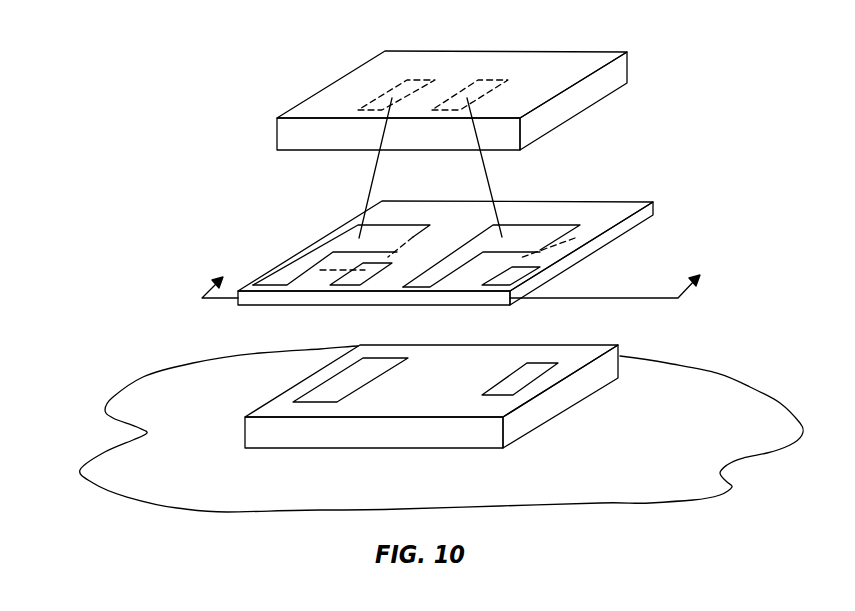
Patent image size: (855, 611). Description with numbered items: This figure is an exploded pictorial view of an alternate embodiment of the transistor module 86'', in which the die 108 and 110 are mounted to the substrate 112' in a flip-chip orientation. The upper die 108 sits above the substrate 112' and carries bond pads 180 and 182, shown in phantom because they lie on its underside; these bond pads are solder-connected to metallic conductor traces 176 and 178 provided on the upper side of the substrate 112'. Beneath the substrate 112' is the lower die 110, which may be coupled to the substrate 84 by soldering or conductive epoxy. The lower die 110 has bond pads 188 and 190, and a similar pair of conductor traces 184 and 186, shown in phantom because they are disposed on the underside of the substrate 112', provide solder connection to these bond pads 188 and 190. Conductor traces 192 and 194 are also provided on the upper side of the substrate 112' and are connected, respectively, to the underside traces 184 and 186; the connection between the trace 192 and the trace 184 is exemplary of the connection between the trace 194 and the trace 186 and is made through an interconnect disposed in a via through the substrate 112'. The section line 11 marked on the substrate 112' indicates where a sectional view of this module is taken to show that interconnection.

The transistor module 86'' is at (198, 104).
The die 108 is at (489, 95).
The bond pad 180 is at (363, 83).
The bond pad 182 is at (465, 64).
The substrate 112' is at (482, 246).
The metallic conductor trace 176 is at (341, 252).
The second conductive pad 178 is at (461, 284).
The conductor trace 184 is at (399, 221).
The conductor trace 186 is at (585, 214).
The conductor trace 192 is at (328, 303).
The conductor trace 194 is at (528, 268).
The die 110 is at (620, 352).
The bond pad 188 is at (312, 380).
The bond pad 190 is at (554, 399).
The substrate 84 is at (204, 478).
The section line 11 is at (461, 275).